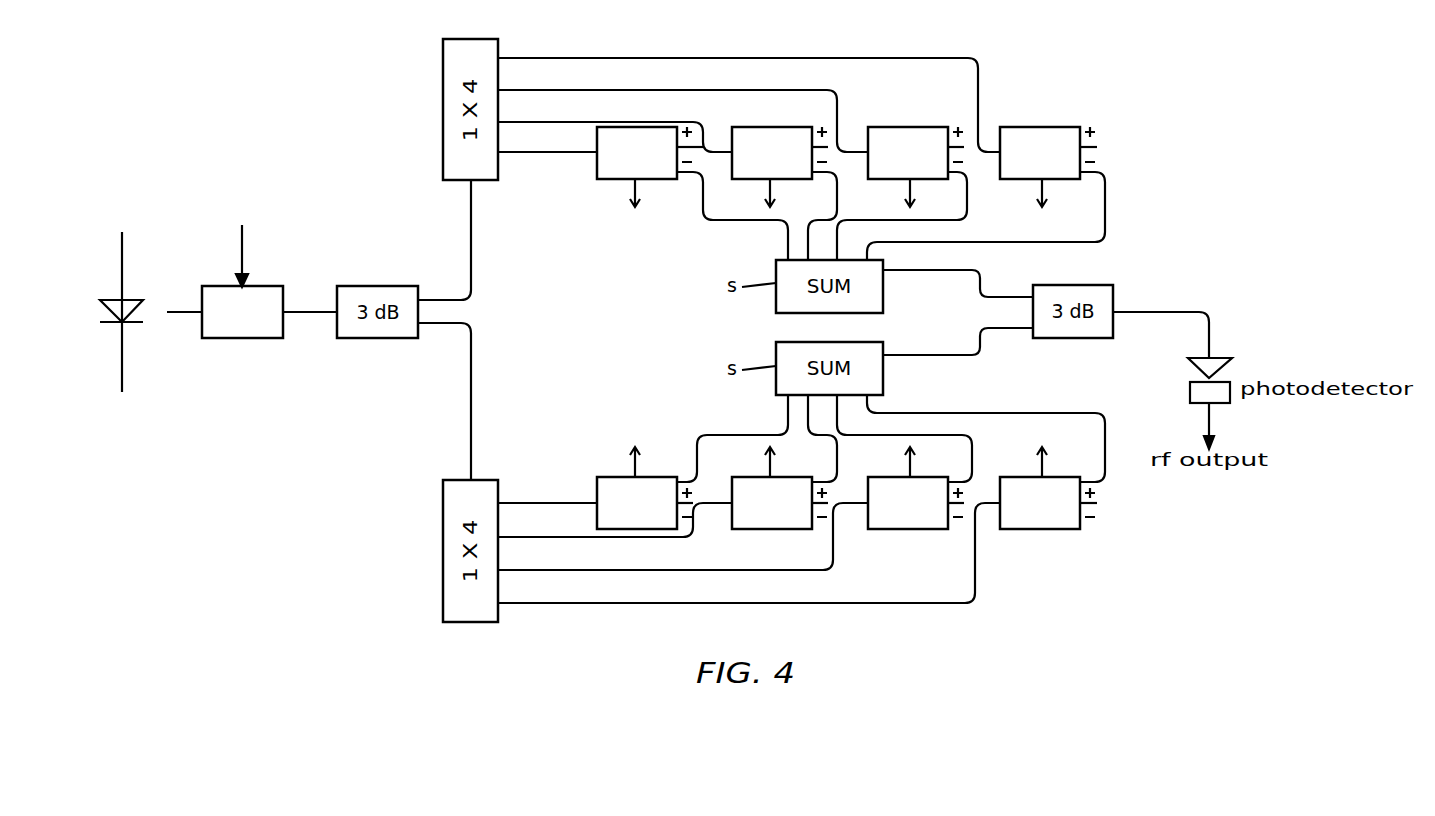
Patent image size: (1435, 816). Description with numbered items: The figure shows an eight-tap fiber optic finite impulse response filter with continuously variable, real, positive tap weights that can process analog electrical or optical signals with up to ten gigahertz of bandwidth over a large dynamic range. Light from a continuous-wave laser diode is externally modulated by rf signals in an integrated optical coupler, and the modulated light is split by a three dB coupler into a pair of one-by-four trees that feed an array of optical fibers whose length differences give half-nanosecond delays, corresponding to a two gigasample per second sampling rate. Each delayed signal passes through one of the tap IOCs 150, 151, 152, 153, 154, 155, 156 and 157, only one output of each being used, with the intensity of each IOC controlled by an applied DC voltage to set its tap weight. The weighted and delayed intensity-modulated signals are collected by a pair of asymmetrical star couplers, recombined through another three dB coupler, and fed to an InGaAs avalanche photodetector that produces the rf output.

The IOC 150 is at (637, 127).
The IOC 151 is at (772, 127).
The IOC 152 is at (906, 127).
The IOC 153 is at (1042, 127).
The IOC 154 is at (634, 529).
The IOC 155 is at (772, 529).
The IOC 156 is at (906, 529).
The IOC 157 is at (1036, 529).